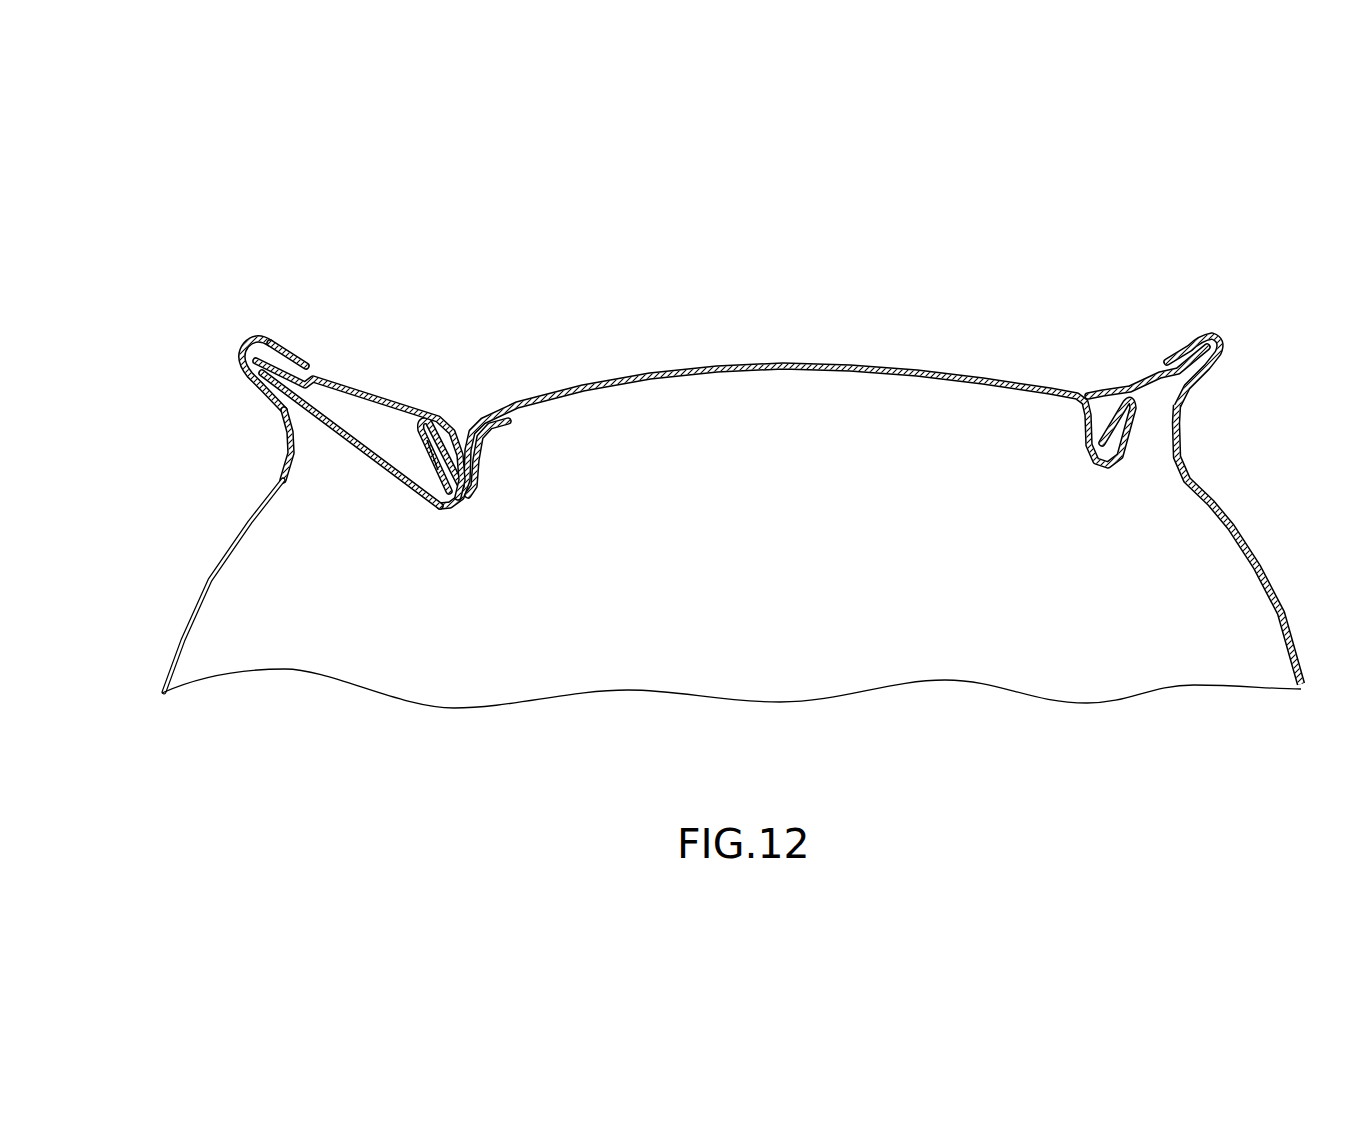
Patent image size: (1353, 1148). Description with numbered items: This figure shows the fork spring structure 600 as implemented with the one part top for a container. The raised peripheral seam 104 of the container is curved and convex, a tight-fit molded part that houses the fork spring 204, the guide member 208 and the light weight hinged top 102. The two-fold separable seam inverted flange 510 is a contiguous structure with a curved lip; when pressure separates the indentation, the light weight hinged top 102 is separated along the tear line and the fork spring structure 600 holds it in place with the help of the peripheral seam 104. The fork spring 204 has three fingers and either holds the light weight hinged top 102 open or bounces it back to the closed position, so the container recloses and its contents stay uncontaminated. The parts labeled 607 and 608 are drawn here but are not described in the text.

The fork spring structure 600 is at (316, 198).
The light weight hinged top 102 is at (759, 365).
The raised peripheral seam 104 is at (282, 342).
The fork spring 204 is at (463, 508).
The guide member 208 is at (1145, 373).
The two-fold separable seam inverted flange 510 is at (387, 403).
The flange tip 607 is at (307, 370).
The side body panel 608 is at (262, 390).